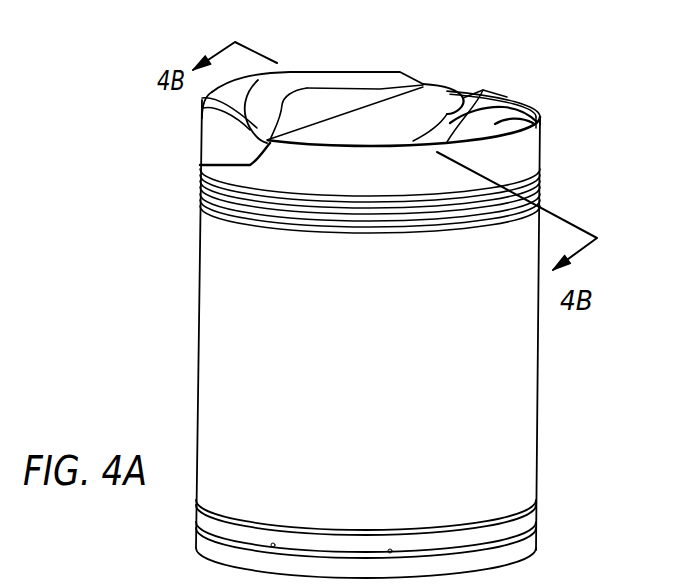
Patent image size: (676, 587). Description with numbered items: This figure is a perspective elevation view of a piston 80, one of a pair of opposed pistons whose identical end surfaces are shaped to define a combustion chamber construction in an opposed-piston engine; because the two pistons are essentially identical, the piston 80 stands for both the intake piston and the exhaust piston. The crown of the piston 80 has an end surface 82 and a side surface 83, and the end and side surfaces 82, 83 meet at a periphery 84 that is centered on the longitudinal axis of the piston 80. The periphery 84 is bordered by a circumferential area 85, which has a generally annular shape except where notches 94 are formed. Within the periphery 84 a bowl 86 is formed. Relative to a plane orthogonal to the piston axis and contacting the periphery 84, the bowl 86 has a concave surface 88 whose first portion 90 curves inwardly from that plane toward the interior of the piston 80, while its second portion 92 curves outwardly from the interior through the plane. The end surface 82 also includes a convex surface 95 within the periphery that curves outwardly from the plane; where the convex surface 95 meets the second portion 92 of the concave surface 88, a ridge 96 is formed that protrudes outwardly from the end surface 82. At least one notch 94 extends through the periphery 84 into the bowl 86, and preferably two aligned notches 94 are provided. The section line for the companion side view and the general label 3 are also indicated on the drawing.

The container 3 is at (370, 121).
The piston 80 is at (556, 400).
The end surface 82 is at (421, 70).
The side surface 83 is at (203, 222).
The periphery 84 is at (537, 107).
The circumferential area 85 is at (538, 122).
The bowl 86 is at (363, 107).
The concave surface 88 is at (507, 100).
The first portion 90 is at (538, 128).
The second portion 92 is at (327, 105).
The notch 94 is at (200, 163).
The convex surface 95 is at (230, 100).
The ridge 96 is at (298, 71).